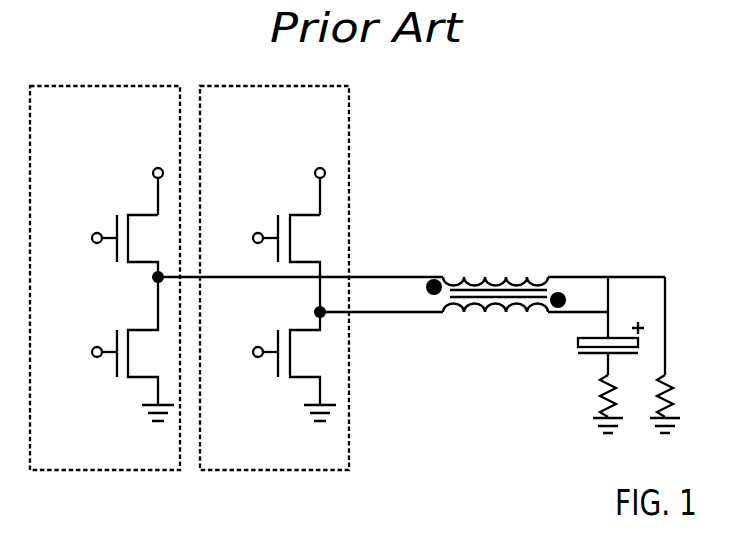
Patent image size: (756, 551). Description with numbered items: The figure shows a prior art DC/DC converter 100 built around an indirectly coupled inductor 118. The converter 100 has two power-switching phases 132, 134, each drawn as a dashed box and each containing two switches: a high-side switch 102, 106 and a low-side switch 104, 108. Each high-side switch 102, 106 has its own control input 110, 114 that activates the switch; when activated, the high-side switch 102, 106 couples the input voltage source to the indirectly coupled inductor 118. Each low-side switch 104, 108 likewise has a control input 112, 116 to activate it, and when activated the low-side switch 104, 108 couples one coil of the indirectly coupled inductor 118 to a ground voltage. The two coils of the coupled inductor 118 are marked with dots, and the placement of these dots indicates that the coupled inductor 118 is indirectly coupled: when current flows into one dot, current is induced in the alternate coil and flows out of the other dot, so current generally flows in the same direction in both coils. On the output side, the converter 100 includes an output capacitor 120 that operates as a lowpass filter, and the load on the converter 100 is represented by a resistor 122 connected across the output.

The DC/DC converter 100 is at (361, 548).
The power-switching phase 132 is at (87, 116).
The power-switching phase 134 is at (257, 116).
The high-side switch 102 is at (137, 208).
The low-side switch 104 is at (137, 322).
The high-side switch 106 is at (301, 208).
The low-side switch 108 is at (300, 323).
The control input 110 is at (51, 250).
The control input 112 is at (51, 364).
The control input 114 is at (211, 250).
The control input 116 is at (211, 364).
The indirectly coupled inductor 118 is at (498, 266).
The output capacitor 120 is at (574, 347).
The resistor 122 is at (681, 388).